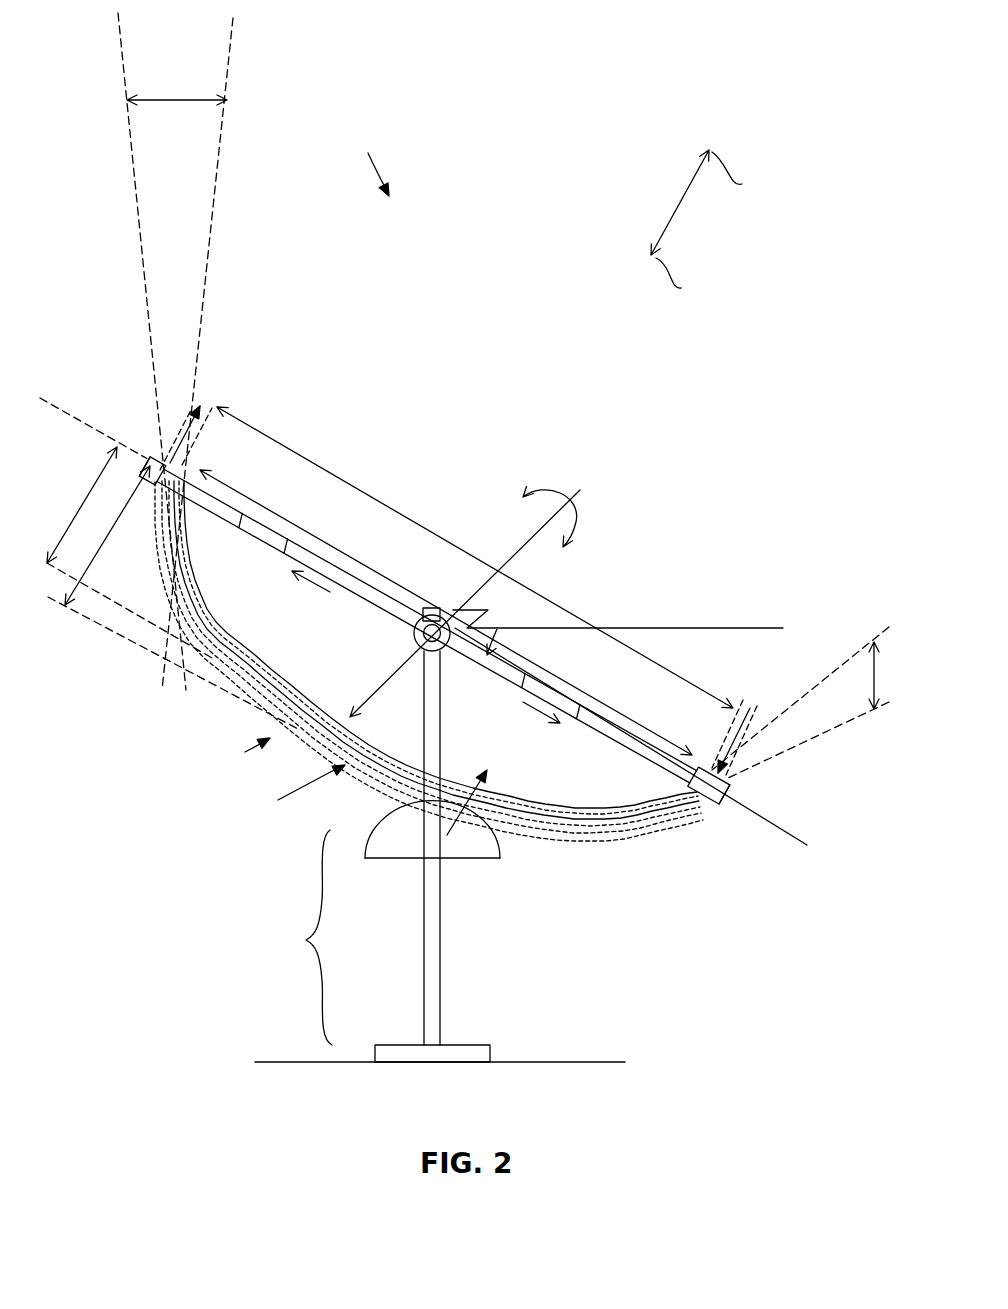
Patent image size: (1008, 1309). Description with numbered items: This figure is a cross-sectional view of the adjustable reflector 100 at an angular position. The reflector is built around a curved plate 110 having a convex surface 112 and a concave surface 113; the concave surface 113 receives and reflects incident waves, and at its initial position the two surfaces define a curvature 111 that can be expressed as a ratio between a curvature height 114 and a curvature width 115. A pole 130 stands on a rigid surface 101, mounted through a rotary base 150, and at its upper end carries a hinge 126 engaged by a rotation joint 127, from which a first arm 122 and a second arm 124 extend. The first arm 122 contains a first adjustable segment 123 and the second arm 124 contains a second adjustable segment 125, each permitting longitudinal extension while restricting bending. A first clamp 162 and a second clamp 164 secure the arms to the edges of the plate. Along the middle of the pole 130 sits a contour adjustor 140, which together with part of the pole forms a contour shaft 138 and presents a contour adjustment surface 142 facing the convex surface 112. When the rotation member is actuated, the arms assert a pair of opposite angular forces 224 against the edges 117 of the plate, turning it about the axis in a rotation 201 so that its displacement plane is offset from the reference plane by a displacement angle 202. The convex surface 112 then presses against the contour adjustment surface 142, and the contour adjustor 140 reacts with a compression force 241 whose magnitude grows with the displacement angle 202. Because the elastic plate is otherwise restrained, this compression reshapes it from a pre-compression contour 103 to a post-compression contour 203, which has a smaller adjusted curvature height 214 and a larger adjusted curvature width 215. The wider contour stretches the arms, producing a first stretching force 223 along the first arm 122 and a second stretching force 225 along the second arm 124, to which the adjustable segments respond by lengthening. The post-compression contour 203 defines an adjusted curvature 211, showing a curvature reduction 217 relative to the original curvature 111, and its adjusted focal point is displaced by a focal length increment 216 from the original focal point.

The adjustable reflector 100 is at (371, 162).
The rigid surface 101 is at (610, 1062).
The pre-compression contour 103 is at (429, 661).
The curved plate 110 is at (616, 824).
The curvature 111 is at (217, 170).
The convex surface 112 is at (543, 834).
The concave surface 113 is at (250, 652).
The curvature height 114 is at (145, 478).
The curvature width 115 is at (650, 742).
The edge 117 is at (148, 457).
The first arm 122 is at (240, 511).
The first adjustable segment 123 is at (335, 565).
The second arm 124 is at (597, 730).
The second adjustable segment 125 is at (578, 710).
The hinge 126 is at (414, 633).
The rotation joint 127 is at (445, 648).
The pole 130 is at (398, 945).
The contour shaft 138 is at (309, 940).
The contour adjustor 140 is at (375, 872).
The contour adjustment surface 142 is at (493, 859).
The rotary base 150 is at (490, 1045).
The first clamp 162 is at (148, 458).
The second clamp 164 is at (732, 780).
The rotation direction 201 is at (540, 492).
The displacement angle 202 is at (500, 632).
The post-compression contour 203 is at (431, 657).
The adjusted curvature 211 is at (140, 170).
The adjusted curvature height 214 is at (81, 507).
The adjusted curvature width 215 is at (297, 454).
The focal length increment 216 is at (680, 205).
The curvature reduction 217 is at (173, 97).
The first stretching force 223 is at (306, 590).
The angular forces 224 is at (474, 577).
The second stretching force 225 is at (534, 719).
The compression force 241 is at (486, 768).